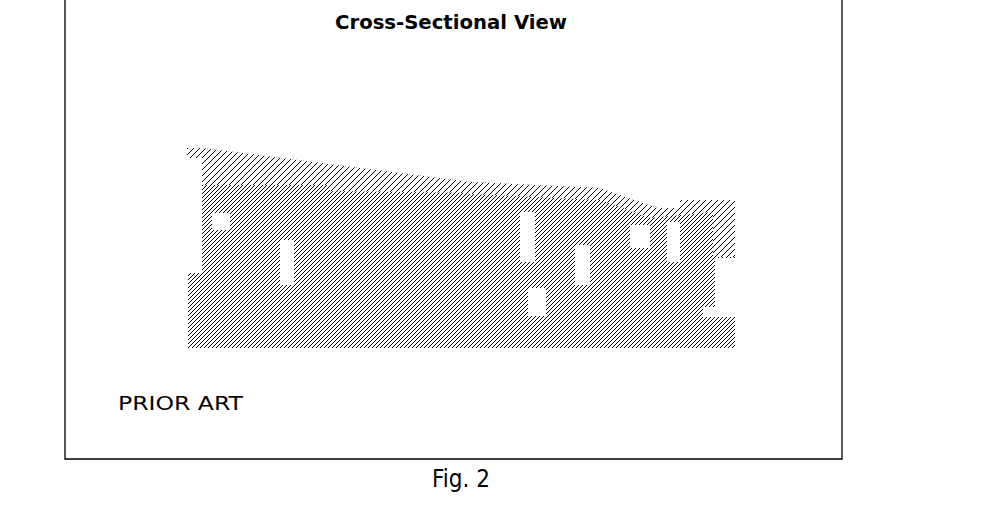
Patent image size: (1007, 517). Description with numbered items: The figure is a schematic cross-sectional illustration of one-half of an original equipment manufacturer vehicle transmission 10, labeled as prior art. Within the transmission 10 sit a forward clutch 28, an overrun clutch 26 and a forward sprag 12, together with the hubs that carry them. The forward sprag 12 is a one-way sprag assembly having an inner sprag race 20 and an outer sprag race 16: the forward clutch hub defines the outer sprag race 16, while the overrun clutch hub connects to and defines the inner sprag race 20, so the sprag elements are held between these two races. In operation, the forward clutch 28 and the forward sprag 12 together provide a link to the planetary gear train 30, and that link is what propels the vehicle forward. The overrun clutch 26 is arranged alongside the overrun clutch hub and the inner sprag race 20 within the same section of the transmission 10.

The vehicle transmission 10 is at (760, 309).
The forward sprag 12 is at (500, 345).
The outer sprag race 16 is at (520, 207).
The inner sprag race 20 is at (302, 178).
The overrun clutch 26 is at (375, 213).
The forward clutch 28 is at (440, 210).
The planetary gear train 30 is at (490, 293).